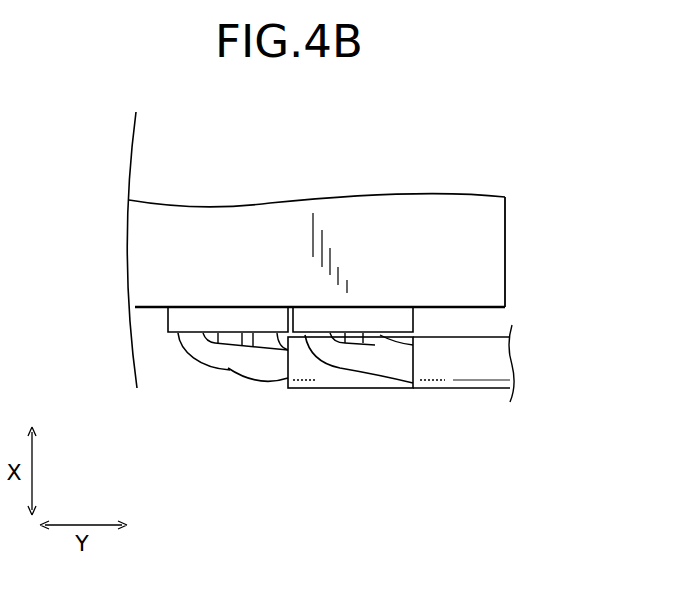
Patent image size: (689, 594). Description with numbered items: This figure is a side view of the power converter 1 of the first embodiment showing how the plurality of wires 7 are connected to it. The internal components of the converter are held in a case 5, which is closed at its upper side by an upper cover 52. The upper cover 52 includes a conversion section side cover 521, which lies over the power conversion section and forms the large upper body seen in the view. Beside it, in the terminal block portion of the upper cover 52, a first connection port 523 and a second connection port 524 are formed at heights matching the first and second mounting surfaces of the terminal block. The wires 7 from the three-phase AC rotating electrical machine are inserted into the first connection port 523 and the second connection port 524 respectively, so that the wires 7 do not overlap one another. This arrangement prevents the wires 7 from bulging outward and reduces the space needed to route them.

The power converter 1 is at (490, 139).
The case 5 is at (506, 235).
The upper cover 52 is at (375, 283).
The conversion section side cover 521 is at (485, 270).
The first connection port 523 is at (166, 336).
The second connection port 524 is at (375, 331).
The wires 7 is at (210, 350).